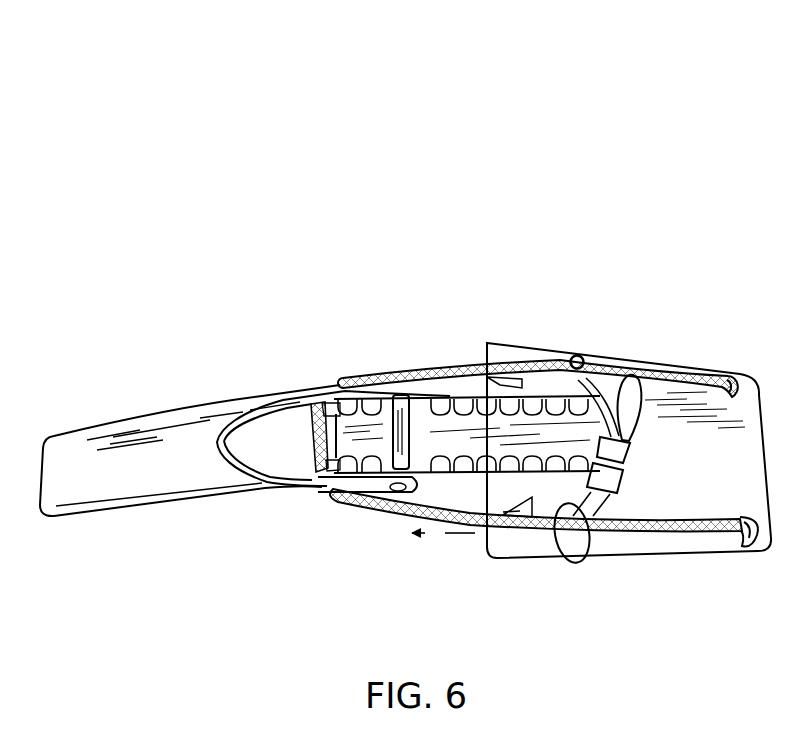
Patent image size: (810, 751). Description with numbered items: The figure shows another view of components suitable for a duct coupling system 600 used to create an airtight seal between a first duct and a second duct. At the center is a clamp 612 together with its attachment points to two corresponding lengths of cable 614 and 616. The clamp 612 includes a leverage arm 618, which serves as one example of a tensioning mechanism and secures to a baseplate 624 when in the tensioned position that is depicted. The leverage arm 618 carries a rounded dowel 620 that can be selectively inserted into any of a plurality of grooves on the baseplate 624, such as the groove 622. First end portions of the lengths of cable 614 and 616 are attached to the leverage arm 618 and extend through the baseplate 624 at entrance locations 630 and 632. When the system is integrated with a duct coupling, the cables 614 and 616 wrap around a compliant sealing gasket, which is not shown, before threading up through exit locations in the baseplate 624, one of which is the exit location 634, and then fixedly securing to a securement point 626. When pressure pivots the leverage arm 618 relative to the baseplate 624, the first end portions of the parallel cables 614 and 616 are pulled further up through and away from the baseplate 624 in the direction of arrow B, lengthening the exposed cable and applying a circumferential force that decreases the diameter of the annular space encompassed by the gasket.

The duct coupling system 600 is at (136, 96).
The clamp 612 is at (462, 359).
The length of cable 614 is at (541, 372).
The length of cable 616 is at (615, 523).
The leverage arm 618 is at (178, 448).
The rounded dowel 620 is at (397, 412).
The groove 622 is at (500, 446).
The baseplate 624 is at (703, 452).
The securement point 626 is at (629, 450).
The entrance location 630 is at (726, 374).
The entrance location 632 is at (745, 548).
The exit location 634 is at (583, 360).